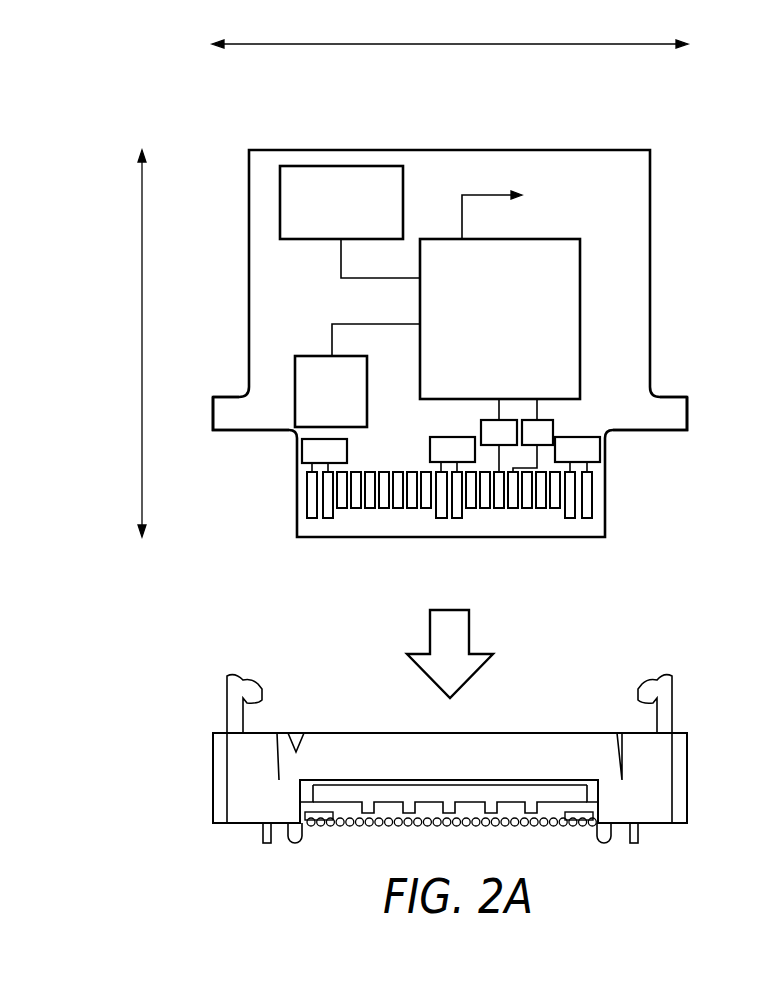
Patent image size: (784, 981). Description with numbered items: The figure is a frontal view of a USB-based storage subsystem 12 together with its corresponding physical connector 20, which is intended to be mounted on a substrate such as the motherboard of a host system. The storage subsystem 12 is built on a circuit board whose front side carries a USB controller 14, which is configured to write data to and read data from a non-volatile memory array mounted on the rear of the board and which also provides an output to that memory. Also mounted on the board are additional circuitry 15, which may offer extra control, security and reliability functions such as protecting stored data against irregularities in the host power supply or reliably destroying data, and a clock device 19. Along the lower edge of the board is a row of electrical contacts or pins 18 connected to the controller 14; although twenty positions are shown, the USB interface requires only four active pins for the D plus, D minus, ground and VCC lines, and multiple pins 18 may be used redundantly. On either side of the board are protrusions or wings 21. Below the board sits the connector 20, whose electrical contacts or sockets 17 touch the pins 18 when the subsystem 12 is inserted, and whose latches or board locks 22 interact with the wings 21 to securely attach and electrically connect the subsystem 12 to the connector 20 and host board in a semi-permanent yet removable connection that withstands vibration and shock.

The storage subsystem 12 is at (526, 110).
The USB controller 14 is at (560, 239).
The additional circuitry 15 is at (366, 166).
The electrical contacts 17 is at (516, 806).
The electrical contacts 18 is at (541, 510).
The clock device 19 is at (315, 356).
The physical connector 20 is at (718, 776).
The wings 21 is at (228, 405).
The latches 22 is at (237, 680).